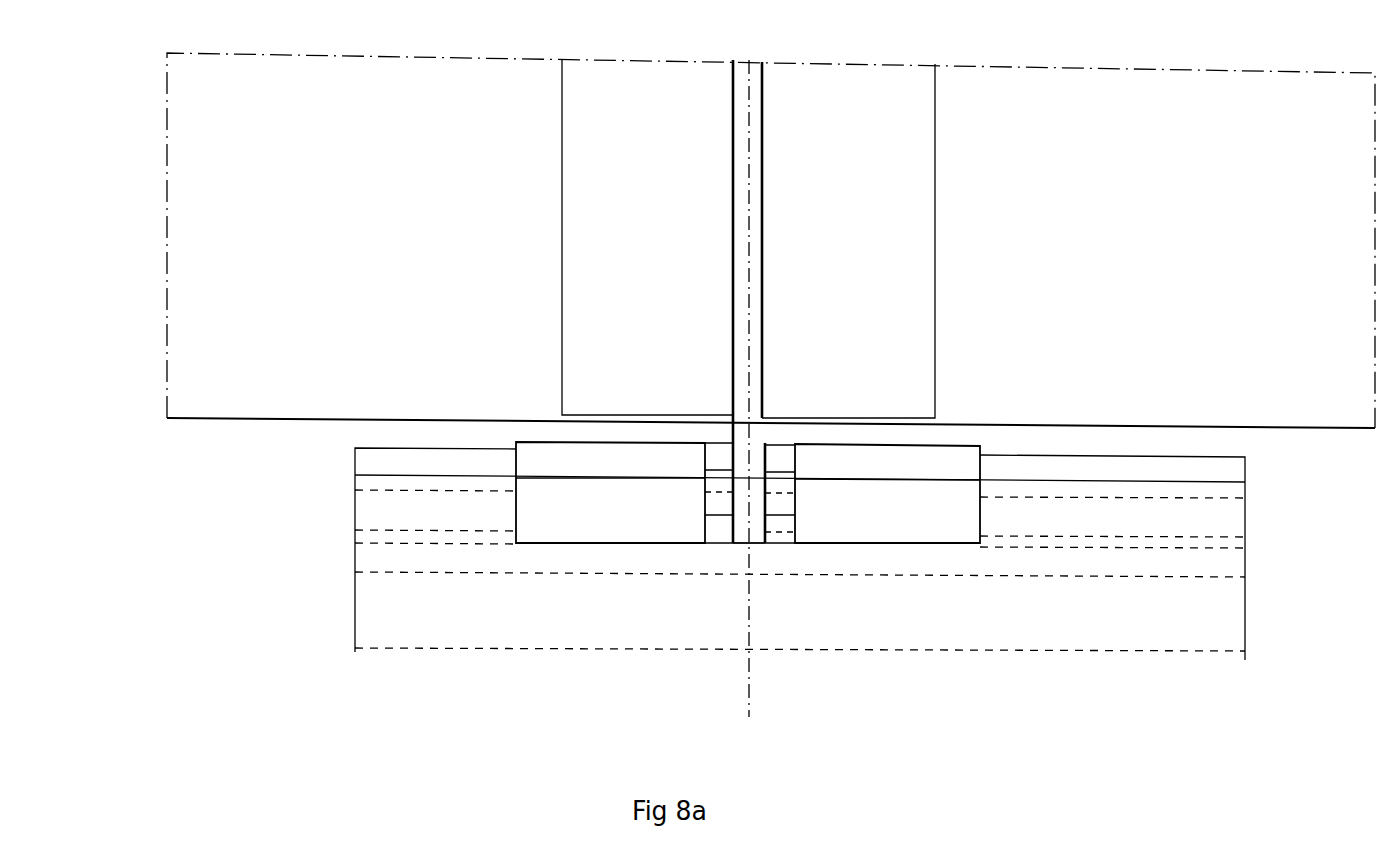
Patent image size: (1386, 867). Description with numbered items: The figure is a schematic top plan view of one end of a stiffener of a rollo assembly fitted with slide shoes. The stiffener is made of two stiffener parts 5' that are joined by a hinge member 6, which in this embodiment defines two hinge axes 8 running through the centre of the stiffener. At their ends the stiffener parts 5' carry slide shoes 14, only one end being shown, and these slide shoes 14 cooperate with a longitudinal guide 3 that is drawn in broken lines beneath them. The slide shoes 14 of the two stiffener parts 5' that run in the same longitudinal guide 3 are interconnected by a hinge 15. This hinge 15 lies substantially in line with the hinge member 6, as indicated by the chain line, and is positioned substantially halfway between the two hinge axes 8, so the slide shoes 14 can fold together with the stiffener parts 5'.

The stiffener part 5' is at (748, 216).
The hinge axis 8 is at (732, 80).
The hinge member 6 is at (749, 60).
The longitudinal guide 3 is at (1245, 548).
The slide shoe 14 is at (627, 523).
The hinge 15 is at (762, 543).